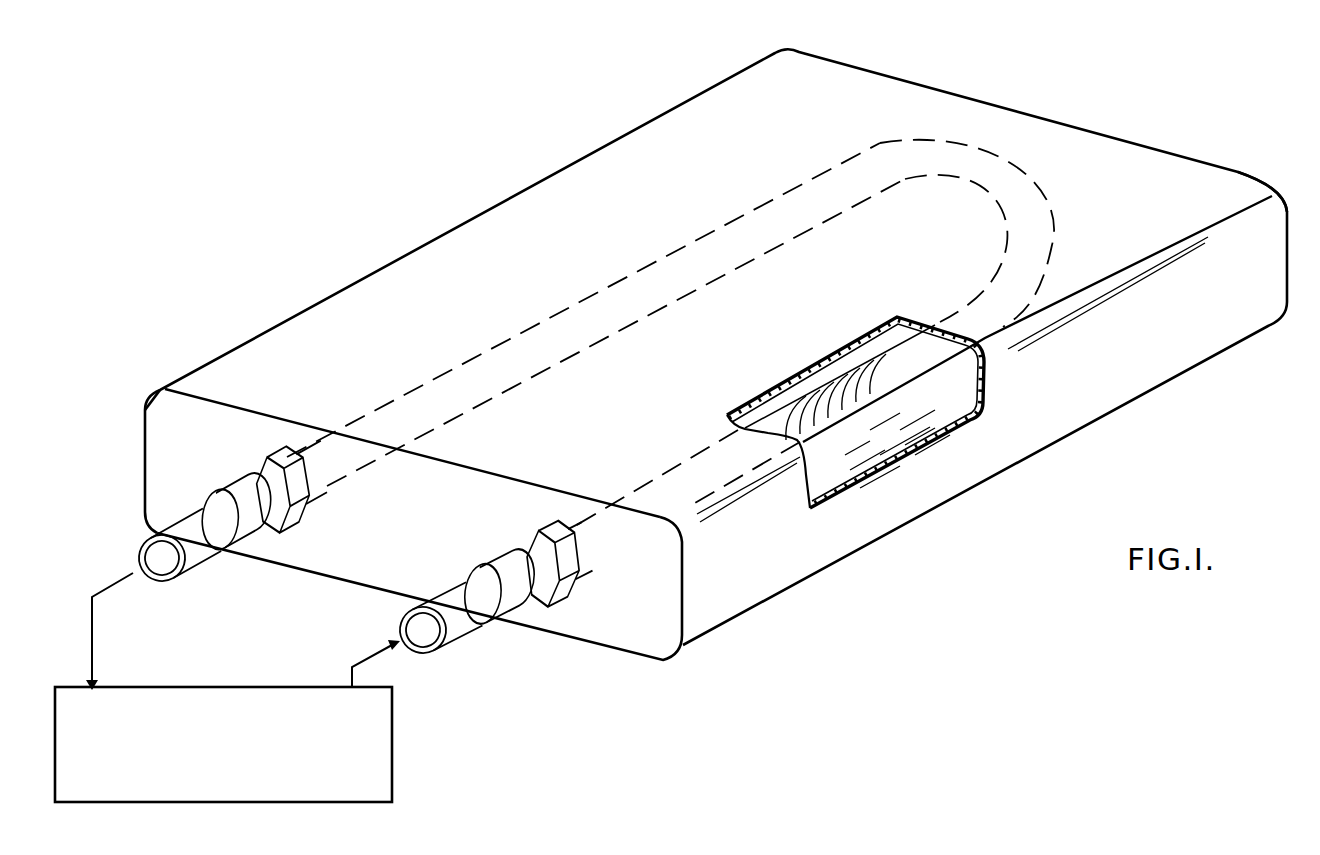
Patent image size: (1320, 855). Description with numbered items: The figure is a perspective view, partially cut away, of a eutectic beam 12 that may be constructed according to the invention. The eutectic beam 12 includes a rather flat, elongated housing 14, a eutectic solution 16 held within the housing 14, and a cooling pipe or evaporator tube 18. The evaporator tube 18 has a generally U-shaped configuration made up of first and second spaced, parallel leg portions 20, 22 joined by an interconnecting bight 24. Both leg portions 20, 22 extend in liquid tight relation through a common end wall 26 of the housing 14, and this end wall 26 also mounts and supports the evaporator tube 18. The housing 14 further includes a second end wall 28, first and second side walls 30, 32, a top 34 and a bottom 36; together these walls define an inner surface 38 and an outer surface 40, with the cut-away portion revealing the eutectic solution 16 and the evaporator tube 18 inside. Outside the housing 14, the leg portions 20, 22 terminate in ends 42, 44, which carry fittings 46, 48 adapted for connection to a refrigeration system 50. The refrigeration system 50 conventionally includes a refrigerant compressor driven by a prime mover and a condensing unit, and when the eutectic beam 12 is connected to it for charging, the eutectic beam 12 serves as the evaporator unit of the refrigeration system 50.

The eutectic beam 12 is at (718, 50).
The housing 14 is at (1102, 397).
The eutectic solution 16 is at (930, 417).
The evaporator tube 18 is at (778, 413).
The first leg portion 20 is at (640, 271).
The second leg portion 22 is at (840, 388).
The bight 24 is at (1048, 214).
The common end wall 26 is at (633, 618).
The second end wall 28 is at (1228, 171).
The first side wall 30 is at (272, 328).
The second side wall 32 is at (752, 566).
The top 34 is at (630, 153).
The bottom 36 is at (1175, 332).
The inner surface 38 is at (982, 378).
The outer surface 40 is at (1030, 352).
The end of first leg portion 42 is at (128, 563).
The end of second leg portion 44 is at (390, 623).
The fitting 46 is at (232, 550).
The fitting 48 is at (500, 615).
The refrigeration system 50 is at (393, 750).